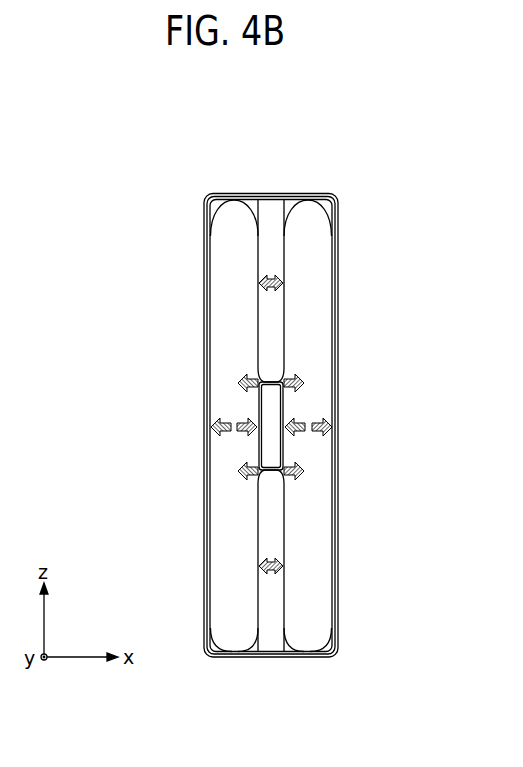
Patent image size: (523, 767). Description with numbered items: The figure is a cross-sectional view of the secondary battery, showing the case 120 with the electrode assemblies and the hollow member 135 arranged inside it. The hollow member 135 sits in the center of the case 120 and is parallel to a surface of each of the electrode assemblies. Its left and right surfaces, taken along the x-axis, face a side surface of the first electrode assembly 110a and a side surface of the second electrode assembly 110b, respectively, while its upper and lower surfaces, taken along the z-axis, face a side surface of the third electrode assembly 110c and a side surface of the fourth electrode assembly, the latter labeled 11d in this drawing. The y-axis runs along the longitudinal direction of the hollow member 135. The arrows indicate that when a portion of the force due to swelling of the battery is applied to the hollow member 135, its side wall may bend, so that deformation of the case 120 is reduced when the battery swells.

The case 120 is at (330, 193).
The first electrode assembly 110a is at (317, 293).
The second electrode assembly 110b is at (222, 308).
The third electrode assembly 110c is at (270, 205).
The lower channel 11d is at (270, 643).
The hollow member 135 is at (287, 403).